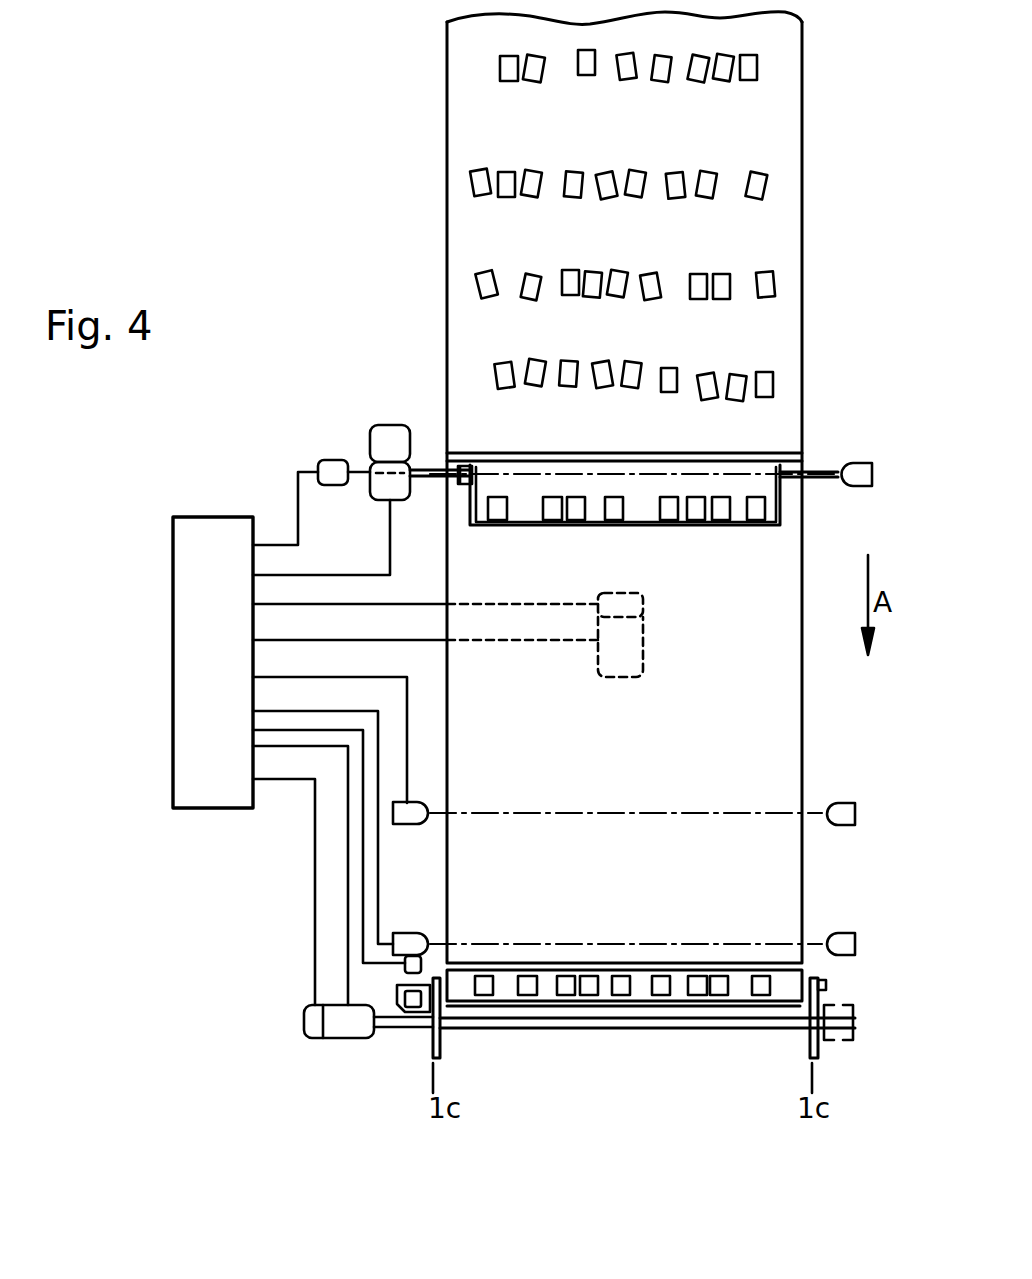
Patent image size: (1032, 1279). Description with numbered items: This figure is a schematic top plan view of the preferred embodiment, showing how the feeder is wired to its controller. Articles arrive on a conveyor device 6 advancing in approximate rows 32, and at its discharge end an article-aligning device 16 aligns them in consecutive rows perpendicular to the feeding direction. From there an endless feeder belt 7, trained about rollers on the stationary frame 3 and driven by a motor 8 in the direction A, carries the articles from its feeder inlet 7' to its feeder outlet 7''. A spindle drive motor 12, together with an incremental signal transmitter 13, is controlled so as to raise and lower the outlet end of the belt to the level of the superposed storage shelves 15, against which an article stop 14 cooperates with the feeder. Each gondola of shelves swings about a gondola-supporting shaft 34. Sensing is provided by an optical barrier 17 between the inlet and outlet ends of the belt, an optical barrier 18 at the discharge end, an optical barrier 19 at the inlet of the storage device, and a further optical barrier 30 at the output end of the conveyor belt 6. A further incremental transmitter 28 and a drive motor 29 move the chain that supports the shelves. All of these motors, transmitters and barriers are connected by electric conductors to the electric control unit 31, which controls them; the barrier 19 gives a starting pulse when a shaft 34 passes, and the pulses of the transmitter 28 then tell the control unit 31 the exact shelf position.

The stationary frame 3 is at (782, 618).
The conveyor device 6 is at (787, 220).
The feeder belt 7 is at (643, 834).
The feeder inlet 7' is at (651, 462).
The feeder outlet 7'' is at (681, 980).
The motor 8 is at (385, 435).
The spindle drive motor 12 is at (643, 648).
The incremental signal transmitter 13 is at (645, 605).
The article stop 14 is at (612, 1008).
The storage shelves 15 is at (675, 988).
The article-aligning device 16 is at (770, 527).
The optical barrier 17 is at (407, 826).
The optical barrier 18 is at (405, 932).
The optical barrier 19 is at (403, 968).
The incremental transmitter 28 is at (315, 1038).
The drive motor 29 is at (353, 1038).
The optical barrier 30 is at (333, 462).
The electric control unit 31 is at (205, 532).
The rows of articles 32 is at (487, 285).
The gondola-supporting shaft 34 is at (398, 1020).